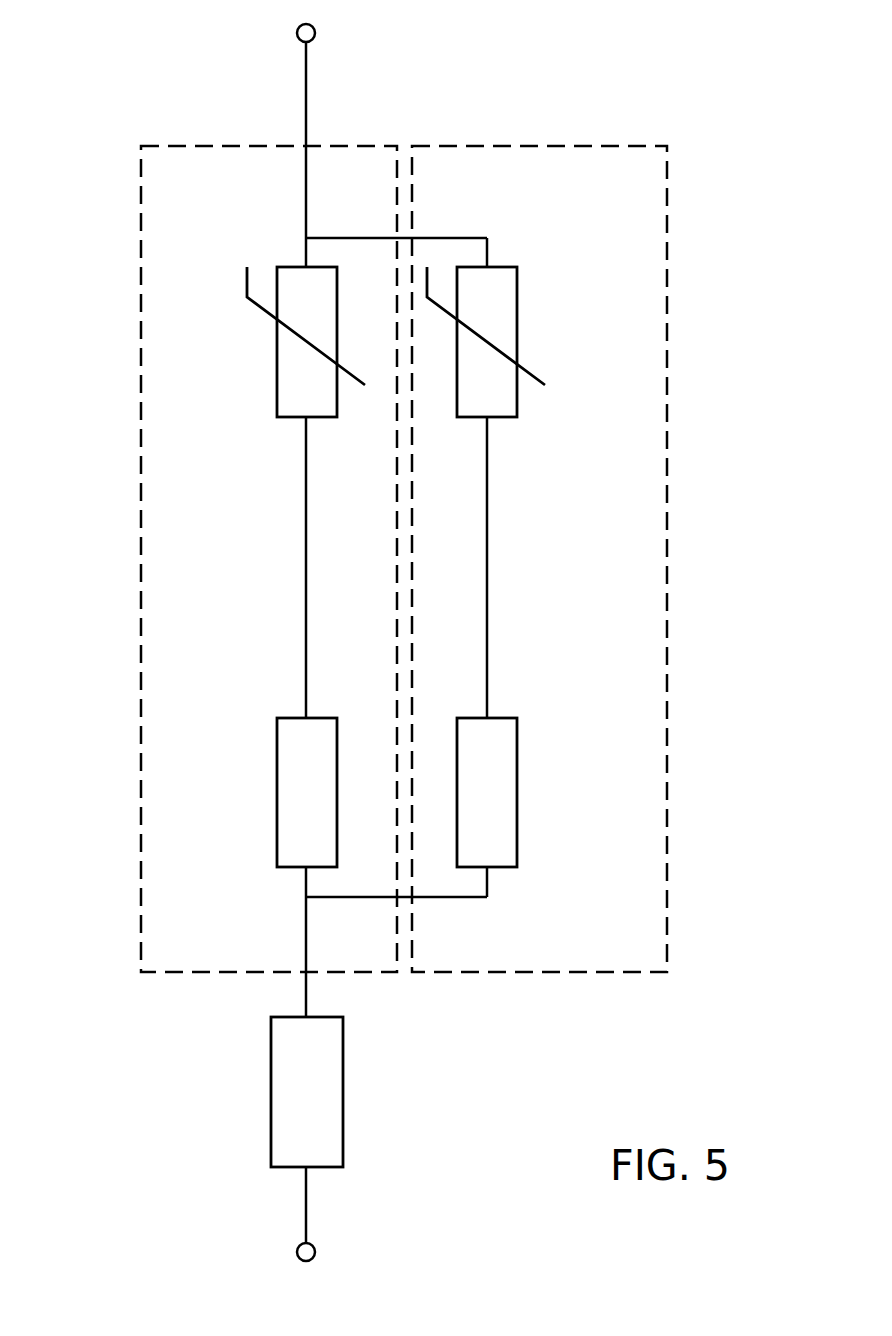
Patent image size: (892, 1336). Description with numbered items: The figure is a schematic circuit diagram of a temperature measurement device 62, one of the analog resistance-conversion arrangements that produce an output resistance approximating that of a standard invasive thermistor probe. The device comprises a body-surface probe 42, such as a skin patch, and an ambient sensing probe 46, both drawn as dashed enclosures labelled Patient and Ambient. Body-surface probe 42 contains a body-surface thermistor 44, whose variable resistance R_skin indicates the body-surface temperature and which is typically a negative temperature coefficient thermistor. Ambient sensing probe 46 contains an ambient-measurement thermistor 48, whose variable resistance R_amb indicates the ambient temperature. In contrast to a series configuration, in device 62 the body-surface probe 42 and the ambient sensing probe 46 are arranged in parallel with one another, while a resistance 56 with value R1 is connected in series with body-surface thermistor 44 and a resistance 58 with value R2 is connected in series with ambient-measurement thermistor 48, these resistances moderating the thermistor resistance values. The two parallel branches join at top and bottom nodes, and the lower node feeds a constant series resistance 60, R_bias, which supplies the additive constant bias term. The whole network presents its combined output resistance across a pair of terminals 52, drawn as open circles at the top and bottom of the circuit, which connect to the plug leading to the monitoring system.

The body-surface probe 42 is at (141, 270).
The body-surface thermistor 44 is at (277, 410).
The ambient sensing probe 46 is at (667, 255).
The ambient-measurement thermistor 48 is at (517, 400).
The terminals 52 is at (316, 30).
The resistance 56 is at (277, 798).
The resistance 58 is at (517, 790).
The constant series resistance 60 is at (343, 1072).
The temperature measurement device 62 is at (708, 75).